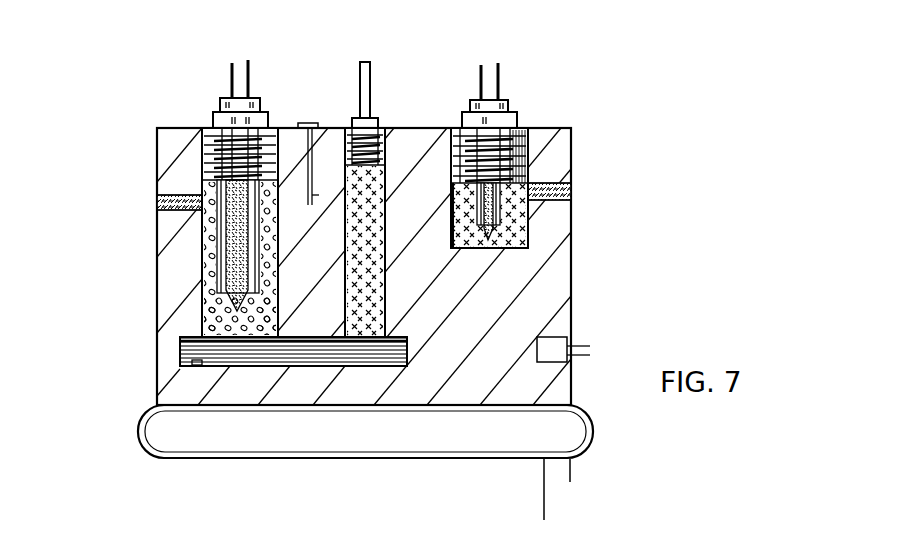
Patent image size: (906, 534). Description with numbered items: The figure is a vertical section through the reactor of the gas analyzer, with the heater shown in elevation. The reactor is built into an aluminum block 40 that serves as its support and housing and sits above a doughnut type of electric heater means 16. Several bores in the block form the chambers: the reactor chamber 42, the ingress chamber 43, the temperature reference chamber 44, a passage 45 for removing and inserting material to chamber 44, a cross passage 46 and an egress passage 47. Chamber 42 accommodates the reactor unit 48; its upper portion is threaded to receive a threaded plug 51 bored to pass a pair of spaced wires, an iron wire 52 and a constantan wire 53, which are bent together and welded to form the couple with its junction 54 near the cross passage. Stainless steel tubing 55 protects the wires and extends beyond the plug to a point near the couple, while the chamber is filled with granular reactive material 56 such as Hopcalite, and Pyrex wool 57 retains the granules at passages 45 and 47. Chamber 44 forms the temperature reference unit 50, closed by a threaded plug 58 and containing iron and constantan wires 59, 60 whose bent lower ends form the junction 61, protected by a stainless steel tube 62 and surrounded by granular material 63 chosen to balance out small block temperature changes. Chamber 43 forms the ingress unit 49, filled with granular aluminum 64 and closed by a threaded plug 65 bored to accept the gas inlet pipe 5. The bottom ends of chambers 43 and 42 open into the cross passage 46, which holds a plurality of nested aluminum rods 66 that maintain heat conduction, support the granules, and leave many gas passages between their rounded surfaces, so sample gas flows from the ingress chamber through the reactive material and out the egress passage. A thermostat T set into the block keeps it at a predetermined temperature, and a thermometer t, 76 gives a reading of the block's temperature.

The gas inlet pipe 5 is at (368, 62).
The doughnut type electric heater means 16 is at (270, 452).
The aluminum block 40 is at (572, 283).
The reactor chamber 42 is at (207, 304).
The ingress chamber 43 is at (333, 158).
The temperature reference chamber 44 is at (528, 238).
The material passage 45 is at (572, 184).
The cross passage 46 is at (200, 362).
The egress passage 47 is at (175, 195).
The reactor unit 48 is at (194, 193).
The ingress unit 49 is at (390, 184).
The temperature reference unit 50 is at (518, 165).
The threaded plug 51 is at (205, 153).
The iron wire 52 is at (230, 77).
The constantan wire 53 is at (284, 40).
The thermocouple junction 54 is at (205, 325).
The stainless steel tubing 55 is at (217, 228).
The reactive material 56 is at (228, 266).
The Pyrex wool 57 is at (157, 201).
The threaded plug 58 is at (529, 128).
The iron wire 59 is at (482, 68).
The constantan wire 60 is at (499, 64).
The junction 61 is at (497, 245).
The stainless steel tube 62 is at (373, 277).
The granular material 63 is at (453, 189).
The granular aluminum 64 is at (360, 238).
The threaded plug 65 is at (385, 158).
The aluminum rods 66 is at (276, 364).
The thermometer 76 is at (300, 123).
The thermostat T is at (545, 340).
The thermometer t is at (320, 195).